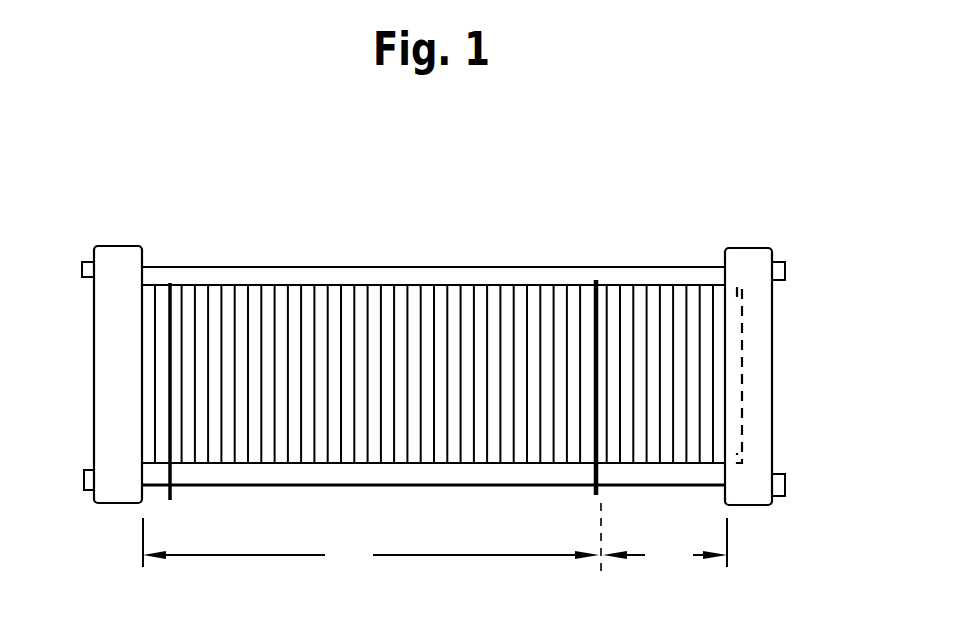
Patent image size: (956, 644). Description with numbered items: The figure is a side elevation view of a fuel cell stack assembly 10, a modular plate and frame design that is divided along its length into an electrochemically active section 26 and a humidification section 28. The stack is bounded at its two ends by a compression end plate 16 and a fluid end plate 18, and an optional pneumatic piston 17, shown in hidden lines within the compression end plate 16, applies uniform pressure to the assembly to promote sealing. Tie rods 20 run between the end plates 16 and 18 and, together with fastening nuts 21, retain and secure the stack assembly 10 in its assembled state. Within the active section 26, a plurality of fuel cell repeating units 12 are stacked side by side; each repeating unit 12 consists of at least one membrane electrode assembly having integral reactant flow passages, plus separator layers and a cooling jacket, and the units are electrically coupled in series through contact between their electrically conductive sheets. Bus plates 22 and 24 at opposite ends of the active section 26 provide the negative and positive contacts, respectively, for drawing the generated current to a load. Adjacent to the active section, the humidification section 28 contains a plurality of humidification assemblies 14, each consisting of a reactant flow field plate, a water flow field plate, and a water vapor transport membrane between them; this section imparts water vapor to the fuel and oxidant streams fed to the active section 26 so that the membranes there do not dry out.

The fuel cell stack assembly 10 is at (592, 208).
The fuel cell repeating unit 12 is at (247, 290).
The humidification assembly 14 is at (665, 292).
The compression end plate 16 is at (750, 260).
The pneumatic piston 17 is at (738, 392).
The fluid end plate 18 is at (120, 260).
The tie rod 20 is at (455, 267).
The fastening nut 21 is at (787, 276).
The bus plate 22 is at (172, 493).
The bus plate 24 is at (596, 488).
The electrochemically active section 26 is at (371, 545).
The humidification section 28 is at (665, 545).